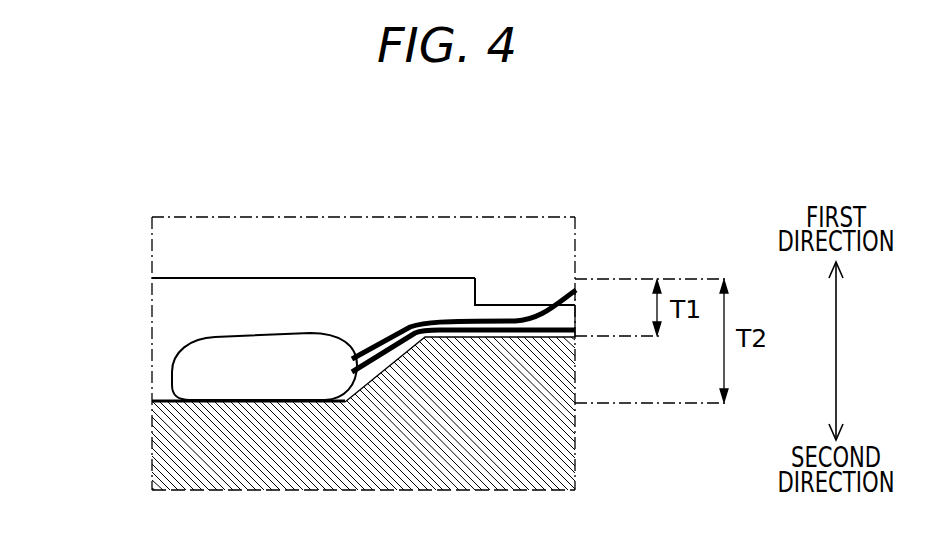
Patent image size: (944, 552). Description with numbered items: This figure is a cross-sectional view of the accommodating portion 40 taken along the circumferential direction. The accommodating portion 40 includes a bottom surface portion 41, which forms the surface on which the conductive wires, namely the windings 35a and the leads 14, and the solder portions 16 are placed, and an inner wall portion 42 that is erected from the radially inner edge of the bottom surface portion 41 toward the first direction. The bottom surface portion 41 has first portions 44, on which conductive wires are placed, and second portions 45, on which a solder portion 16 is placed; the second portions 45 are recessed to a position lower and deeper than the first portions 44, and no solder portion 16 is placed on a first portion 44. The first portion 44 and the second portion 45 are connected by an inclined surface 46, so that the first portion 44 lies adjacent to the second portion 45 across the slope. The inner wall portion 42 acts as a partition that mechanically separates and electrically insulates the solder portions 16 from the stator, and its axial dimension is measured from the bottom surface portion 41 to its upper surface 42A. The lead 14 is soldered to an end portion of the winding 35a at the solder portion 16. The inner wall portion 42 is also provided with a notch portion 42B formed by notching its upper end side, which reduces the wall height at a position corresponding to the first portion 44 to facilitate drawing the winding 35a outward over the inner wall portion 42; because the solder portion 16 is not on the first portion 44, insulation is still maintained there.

The accommodating portion 40 is at (638, 170).
The lead 14 is at (560, 328).
The solder portion 16 is at (222, 335).
The bottom surface portion 41 is at (314, 263).
The inner wall portion 42 is at (340, 217).
The upper surface 42A is at (177, 278).
The notch portion 42B is at (487, 305).
The first portion 44 is at (533, 320).
The second portion 45 is at (247, 400).
The inclined surface 46 is at (386, 346).
The winding 35a is at (561, 296).